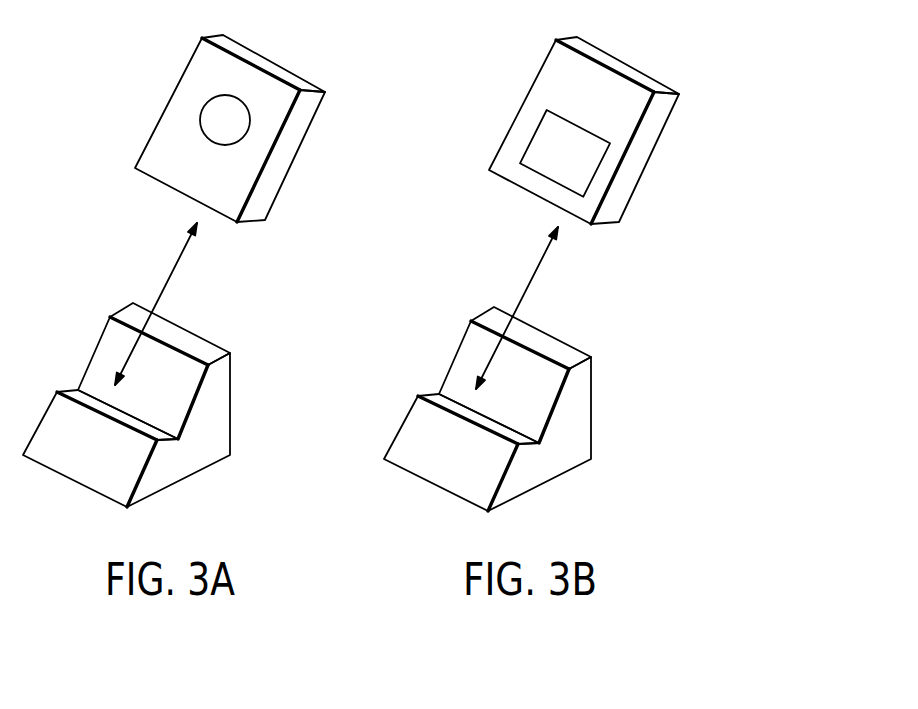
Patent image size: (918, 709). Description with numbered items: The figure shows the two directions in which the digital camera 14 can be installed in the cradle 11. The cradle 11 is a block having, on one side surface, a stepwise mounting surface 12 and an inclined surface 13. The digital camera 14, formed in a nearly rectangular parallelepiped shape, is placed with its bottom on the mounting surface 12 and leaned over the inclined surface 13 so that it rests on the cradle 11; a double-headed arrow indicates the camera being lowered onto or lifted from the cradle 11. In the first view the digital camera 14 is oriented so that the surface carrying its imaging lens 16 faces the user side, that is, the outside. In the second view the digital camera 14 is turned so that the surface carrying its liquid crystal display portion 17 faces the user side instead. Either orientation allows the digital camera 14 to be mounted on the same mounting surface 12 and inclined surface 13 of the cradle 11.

In FIG. 3A, the cradle 11 is at (73, 473).
In FIG. 3B, the cradle 11 is at (487, 437).
In FIG. 3A, the mounting surface 12 is at (77, 392).
In FIG. 3B, the mounting surface 12 is at (473, 397).
In FIG. 3A, the inclined surface 13 is at (188, 382).
In FIG. 3B, the inclined surface 13 is at (531, 375).
In FIG. 3A, the digital camera 14 is at (170, 98).
In FIG. 3B, the digital camera 14 is at (573, 130).
In FIG. 3A, the imaging lens 16 is at (227, 138).
In FIG. 3B, the liquid crystal display portion 17 is at (565, 136).